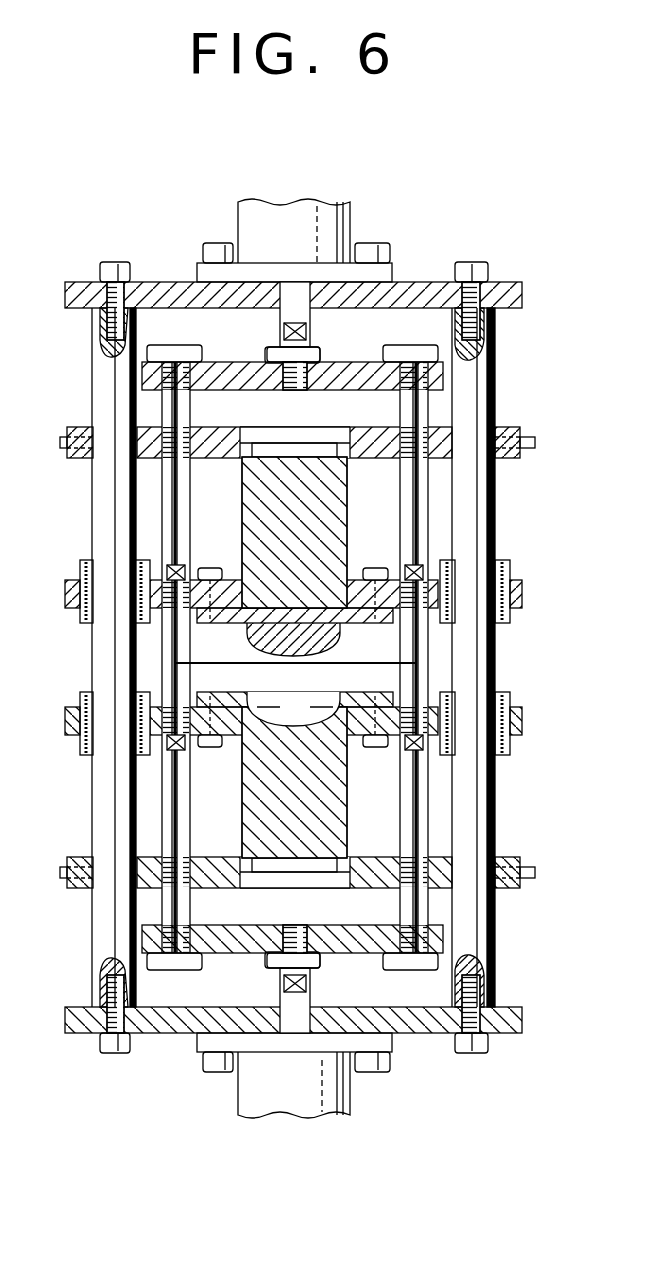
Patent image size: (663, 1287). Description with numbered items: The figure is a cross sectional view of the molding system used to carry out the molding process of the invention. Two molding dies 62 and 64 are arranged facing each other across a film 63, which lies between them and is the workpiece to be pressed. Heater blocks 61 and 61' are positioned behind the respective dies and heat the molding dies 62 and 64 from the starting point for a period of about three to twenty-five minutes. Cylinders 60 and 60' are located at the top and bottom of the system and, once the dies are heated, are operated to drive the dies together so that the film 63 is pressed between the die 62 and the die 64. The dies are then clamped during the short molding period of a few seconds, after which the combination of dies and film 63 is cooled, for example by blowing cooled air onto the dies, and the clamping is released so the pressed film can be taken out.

The cylinder 60 is at (339, 228).
The cylinder 60' is at (337, 1090).
The heater block 61 is at (396, 532).
The heater block 61' is at (400, 782).
The molding die 62 is at (335, 633).
The film 63 is at (400, 665).
The molding die 64 is at (393, 697).